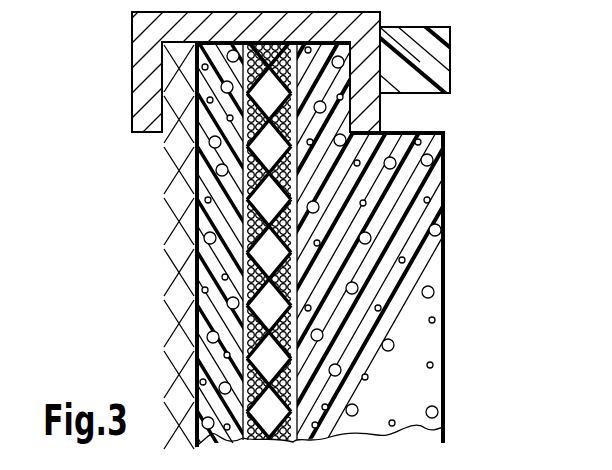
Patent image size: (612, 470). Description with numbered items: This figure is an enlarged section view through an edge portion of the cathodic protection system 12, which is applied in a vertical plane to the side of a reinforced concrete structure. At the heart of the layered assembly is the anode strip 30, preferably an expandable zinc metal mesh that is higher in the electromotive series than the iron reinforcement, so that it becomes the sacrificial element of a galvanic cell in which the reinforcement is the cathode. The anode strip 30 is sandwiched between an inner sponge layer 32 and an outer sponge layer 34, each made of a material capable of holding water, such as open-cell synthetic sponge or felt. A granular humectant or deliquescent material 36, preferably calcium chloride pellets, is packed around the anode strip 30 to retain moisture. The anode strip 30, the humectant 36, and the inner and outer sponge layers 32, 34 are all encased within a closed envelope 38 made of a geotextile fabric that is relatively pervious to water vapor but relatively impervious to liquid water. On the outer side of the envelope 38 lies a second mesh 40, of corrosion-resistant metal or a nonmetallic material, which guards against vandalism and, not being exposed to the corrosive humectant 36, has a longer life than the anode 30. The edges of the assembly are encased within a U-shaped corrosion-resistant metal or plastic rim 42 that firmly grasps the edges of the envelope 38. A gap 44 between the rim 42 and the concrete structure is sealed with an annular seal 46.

The cathodic protection system 12 is at (78, 186).
The anode strip 30 is at (268, 258).
The inner sponge layer 32 is at (397, 325).
The outer sponge layer 34 is at (195, 312).
The humectant or deliquescent material 36 is at (500, 150).
The envelope 38 is at (200, 385).
The second mesh 40 is at (165, 288).
The rim 42 is at (143, 25).
The gap 44 is at (417, 118).
The annular seal 46 is at (430, 53).